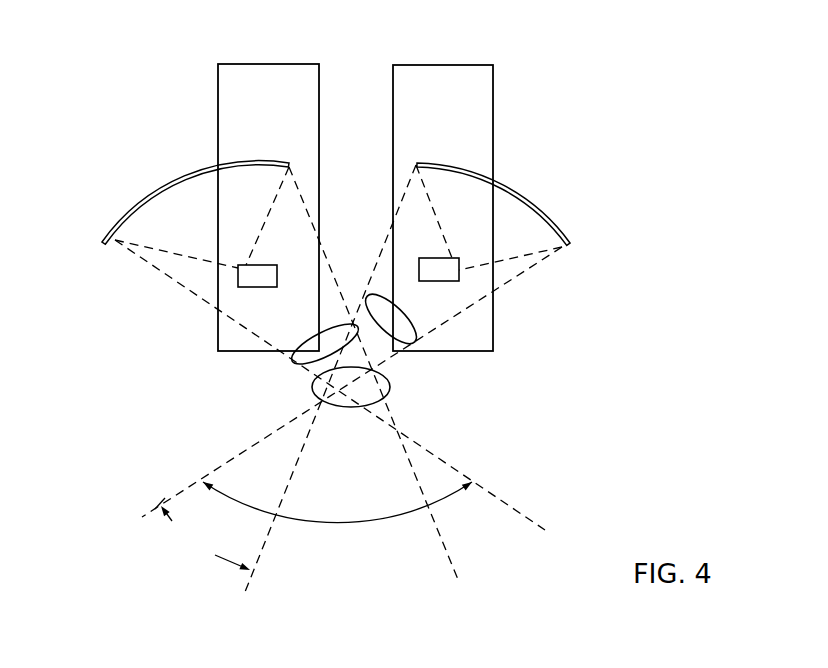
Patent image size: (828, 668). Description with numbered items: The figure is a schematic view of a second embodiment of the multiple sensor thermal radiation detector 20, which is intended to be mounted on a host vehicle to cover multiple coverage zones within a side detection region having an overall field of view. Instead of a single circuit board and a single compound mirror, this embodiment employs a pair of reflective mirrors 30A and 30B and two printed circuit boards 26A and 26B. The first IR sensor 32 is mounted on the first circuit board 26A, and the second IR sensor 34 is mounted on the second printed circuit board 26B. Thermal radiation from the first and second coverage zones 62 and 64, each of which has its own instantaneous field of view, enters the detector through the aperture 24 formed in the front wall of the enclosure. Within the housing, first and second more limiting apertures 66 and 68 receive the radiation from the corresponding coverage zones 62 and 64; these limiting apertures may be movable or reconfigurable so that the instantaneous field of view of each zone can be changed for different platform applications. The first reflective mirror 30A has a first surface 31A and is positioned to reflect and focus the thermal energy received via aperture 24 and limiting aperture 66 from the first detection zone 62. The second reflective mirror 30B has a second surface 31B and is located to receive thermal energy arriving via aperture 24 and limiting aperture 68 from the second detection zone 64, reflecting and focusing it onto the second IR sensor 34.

The thermal radiation detector 20 is at (577, 91).
The aperture 24 is at (341, 409).
The first printed circuit board 26A is at (295, 64).
The second printed circuit board 26B is at (467, 65).
The first reflective mirror 30A is at (112, 222).
The second reflective mirror 30B is at (564, 221).
The first surface 31A is at (185, 203).
The second surface 31B is at (508, 207).
The first IR sensor 32 is at (240, 288).
The second IR sensor 34 is at (455, 283).
The first coverage zone 62 is at (503, 498).
The second coverage zone 64 is at (175, 497).
The first limiting aperture 66 is at (318, 333).
The second limiting aperture 68 is at (400, 312).